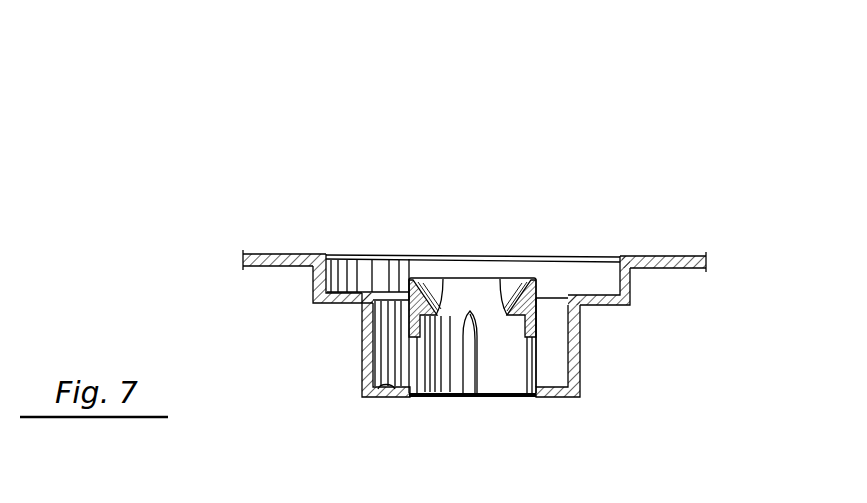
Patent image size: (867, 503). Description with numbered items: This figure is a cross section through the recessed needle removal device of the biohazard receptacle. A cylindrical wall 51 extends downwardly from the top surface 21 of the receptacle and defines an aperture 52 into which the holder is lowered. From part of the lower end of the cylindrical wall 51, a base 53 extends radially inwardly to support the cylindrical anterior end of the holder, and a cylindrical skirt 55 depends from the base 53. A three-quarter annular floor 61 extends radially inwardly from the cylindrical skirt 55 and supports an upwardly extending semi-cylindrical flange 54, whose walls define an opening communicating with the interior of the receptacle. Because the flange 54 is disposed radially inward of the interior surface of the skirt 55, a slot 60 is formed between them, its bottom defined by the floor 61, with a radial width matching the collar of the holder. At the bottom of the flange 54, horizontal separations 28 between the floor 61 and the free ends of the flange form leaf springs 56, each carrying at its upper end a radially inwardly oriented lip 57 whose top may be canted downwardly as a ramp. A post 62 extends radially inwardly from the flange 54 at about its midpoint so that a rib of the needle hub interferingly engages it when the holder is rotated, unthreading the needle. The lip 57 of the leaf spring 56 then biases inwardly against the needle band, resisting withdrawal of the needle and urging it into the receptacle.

The aperture 52 is at (479, 116).
The top surface 21 is at (266, 255).
The cylindrical wall 51 is at (312, 285).
The base 53 is at (351, 272).
The semi-cylindrical flange 54 is at (480, 277).
The cylindrical skirt 55 is at (360, 372).
The leaf spring 56 is at (427, 272).
The lip 57 is at (436, 275).
The slot 60 is at (548, 318).
The floor 61 is at (380, 392).
The horizontal separation 28 is at (433, 378).
The post 62 is at (470, 366).